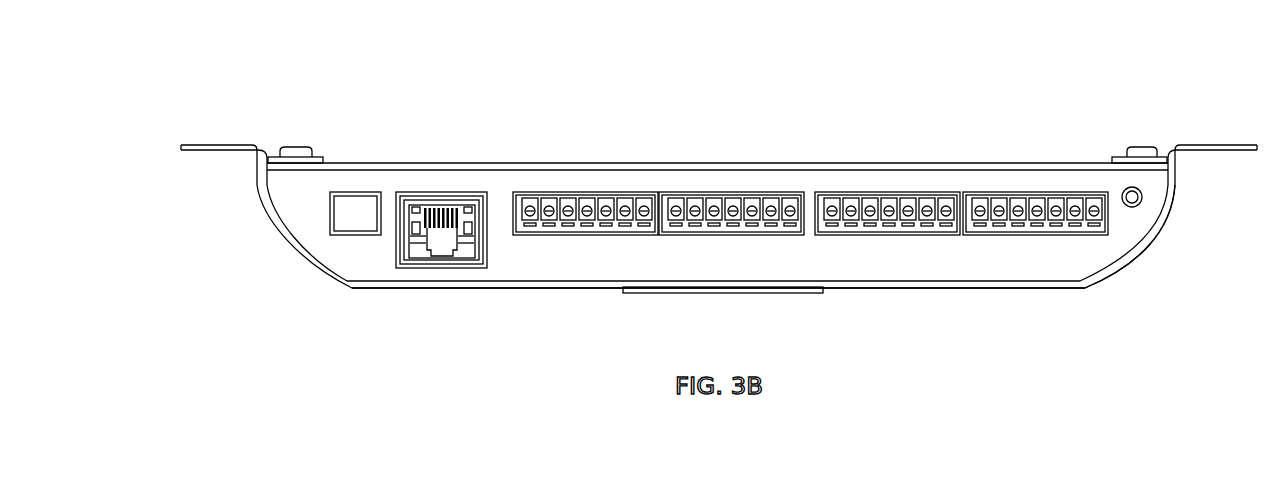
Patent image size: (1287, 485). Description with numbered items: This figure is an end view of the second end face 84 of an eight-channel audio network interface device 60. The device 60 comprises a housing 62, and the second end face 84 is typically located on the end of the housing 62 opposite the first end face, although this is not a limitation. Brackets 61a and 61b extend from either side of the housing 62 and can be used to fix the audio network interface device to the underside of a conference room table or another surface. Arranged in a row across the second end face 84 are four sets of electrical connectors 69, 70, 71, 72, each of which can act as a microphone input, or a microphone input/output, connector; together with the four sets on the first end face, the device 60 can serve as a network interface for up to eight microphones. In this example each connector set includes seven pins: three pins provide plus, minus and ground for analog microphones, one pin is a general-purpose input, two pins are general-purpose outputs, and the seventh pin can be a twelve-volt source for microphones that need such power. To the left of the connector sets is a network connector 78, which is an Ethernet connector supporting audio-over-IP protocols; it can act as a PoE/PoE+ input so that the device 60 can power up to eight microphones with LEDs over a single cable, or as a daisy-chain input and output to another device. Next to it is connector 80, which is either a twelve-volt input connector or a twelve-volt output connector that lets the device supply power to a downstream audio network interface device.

The audio network interface device 60 is at (275, 252).
The bracket 61a is at (205, 145).
The bracket 61b is at (1200, 145).
The housing 62 is at (352, 289).
The set of electrical connectors 69 is at (598, 190).
The set of electrical connectors 70 is at (726, 190).
The set of electrical connectors 71 is at (873, 188).
The set of electrical connectors 72 is at (1010, 188).
The network connector 78 is at (462, 269).
The 12V connector 80 is at (345, 206).
The second end face 84 is at (1087, 254).